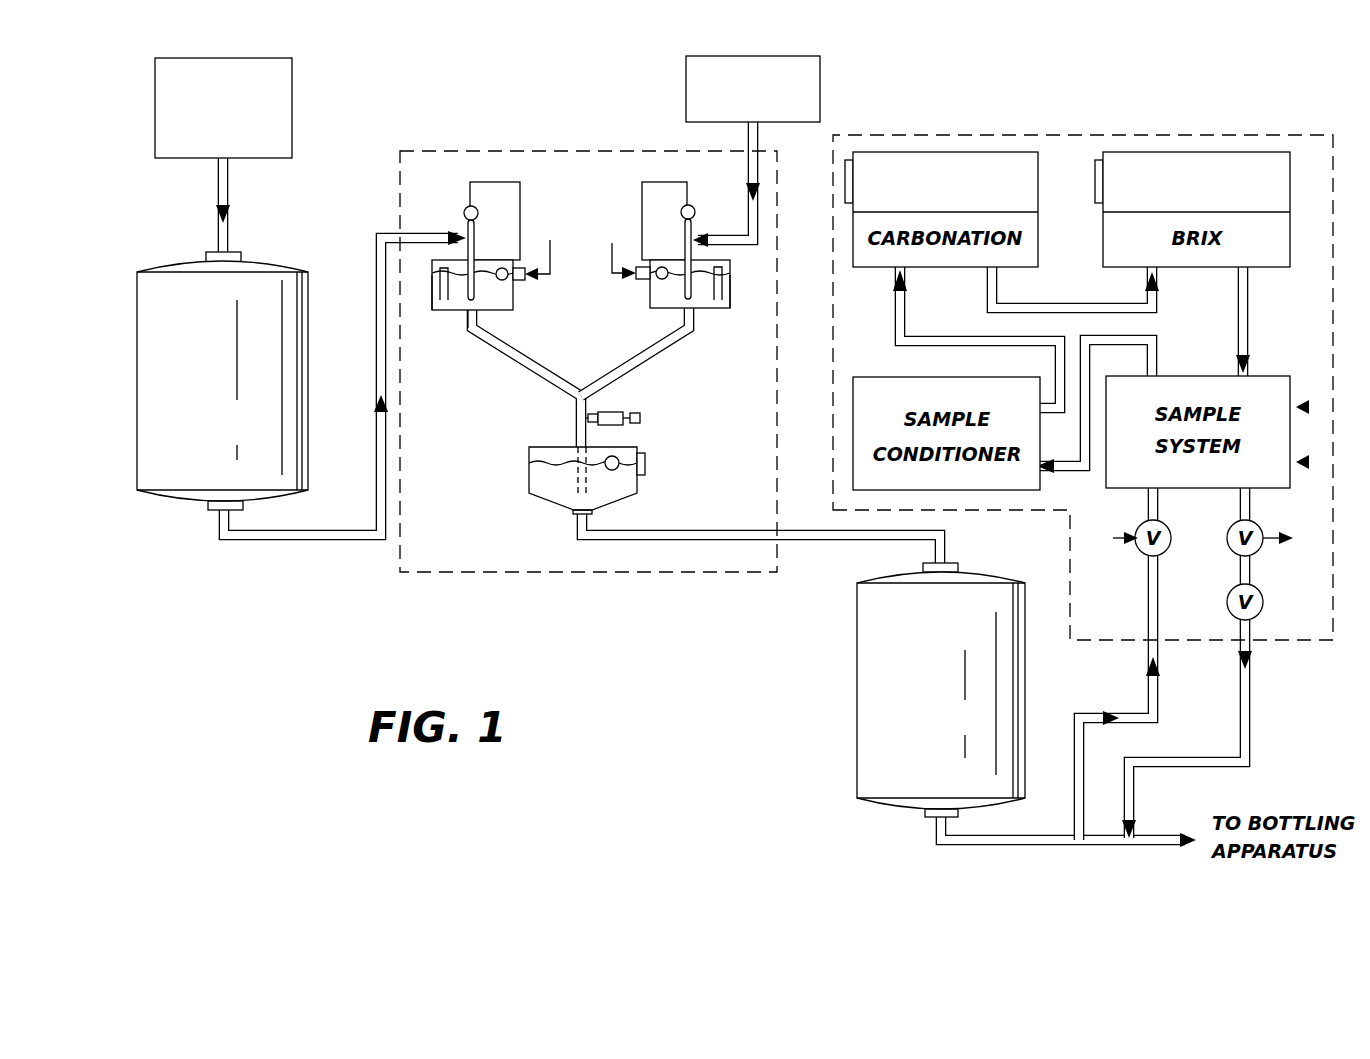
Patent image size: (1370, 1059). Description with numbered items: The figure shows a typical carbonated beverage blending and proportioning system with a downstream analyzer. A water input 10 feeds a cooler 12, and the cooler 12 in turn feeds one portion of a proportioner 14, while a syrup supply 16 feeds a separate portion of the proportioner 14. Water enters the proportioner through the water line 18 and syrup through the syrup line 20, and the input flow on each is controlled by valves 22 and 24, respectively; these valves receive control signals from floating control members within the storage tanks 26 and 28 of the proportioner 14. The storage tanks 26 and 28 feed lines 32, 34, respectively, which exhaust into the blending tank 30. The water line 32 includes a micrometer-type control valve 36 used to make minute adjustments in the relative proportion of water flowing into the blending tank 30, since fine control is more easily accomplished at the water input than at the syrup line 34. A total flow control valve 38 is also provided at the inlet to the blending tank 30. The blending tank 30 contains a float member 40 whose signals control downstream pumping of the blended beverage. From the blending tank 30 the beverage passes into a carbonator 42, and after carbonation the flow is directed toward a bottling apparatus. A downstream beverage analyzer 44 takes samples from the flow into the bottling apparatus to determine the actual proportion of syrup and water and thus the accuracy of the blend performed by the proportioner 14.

The water input 10 is at (278, 88).
The cooler 12 is at (260, 282).
The proportioner 14 is at (506, 148).
The syrup supply 16 is at (818, 77).
The water line 18 is at (366, 240).
The syrup line 20 is at (757, 222).
The valve 22 is at (533, 260).
The valve 24 is at (625, 252).
The storage tank 26 is at (434, 313).
The storage tank 28 is at (731, 309).
The blending tank 30 is at (627, 450).
The water line 32 is at (553, 338).
The syrup line 34 is at (622, 340).
The control valve 36 is at (462, 333).
The total flow control valve 38 is at (615, 410).
The float member 40 is at (646, 475).
The carbonator 42 is at (865, 725).
The beverage analyzer 44 is at (1100, 135).